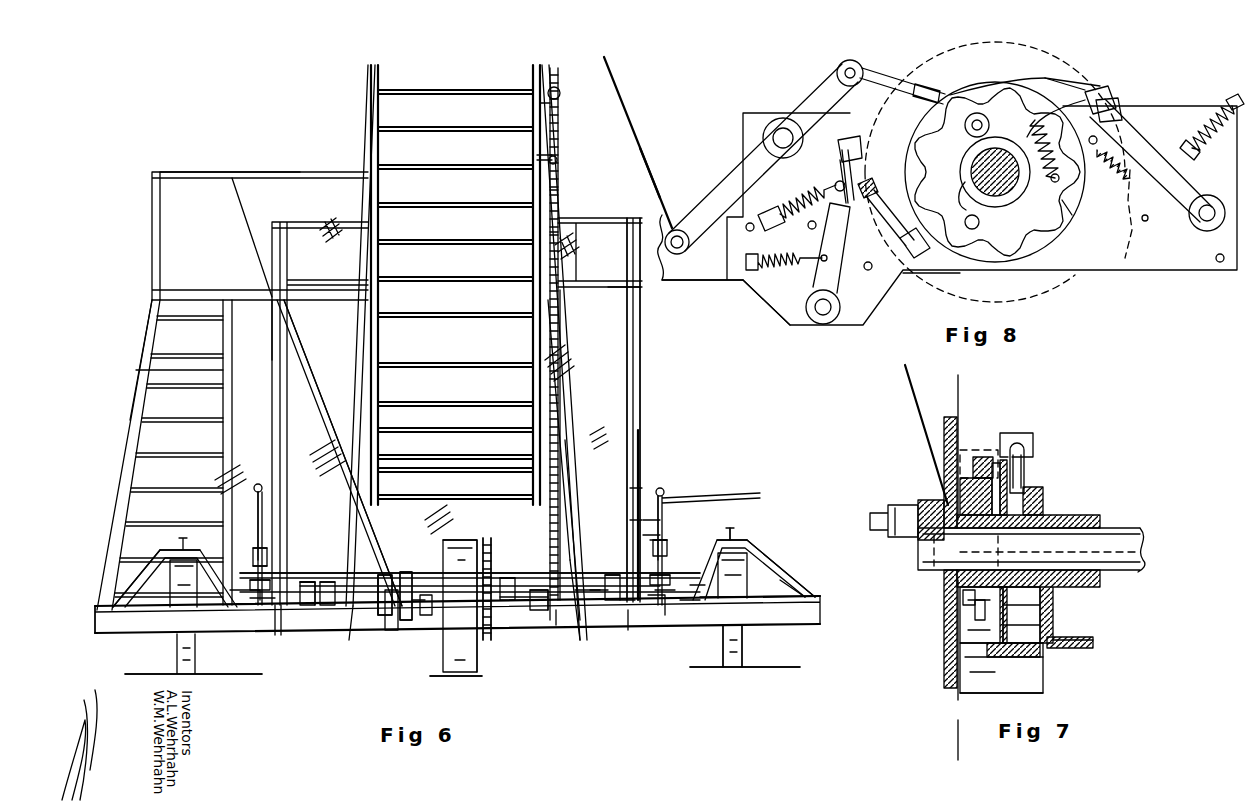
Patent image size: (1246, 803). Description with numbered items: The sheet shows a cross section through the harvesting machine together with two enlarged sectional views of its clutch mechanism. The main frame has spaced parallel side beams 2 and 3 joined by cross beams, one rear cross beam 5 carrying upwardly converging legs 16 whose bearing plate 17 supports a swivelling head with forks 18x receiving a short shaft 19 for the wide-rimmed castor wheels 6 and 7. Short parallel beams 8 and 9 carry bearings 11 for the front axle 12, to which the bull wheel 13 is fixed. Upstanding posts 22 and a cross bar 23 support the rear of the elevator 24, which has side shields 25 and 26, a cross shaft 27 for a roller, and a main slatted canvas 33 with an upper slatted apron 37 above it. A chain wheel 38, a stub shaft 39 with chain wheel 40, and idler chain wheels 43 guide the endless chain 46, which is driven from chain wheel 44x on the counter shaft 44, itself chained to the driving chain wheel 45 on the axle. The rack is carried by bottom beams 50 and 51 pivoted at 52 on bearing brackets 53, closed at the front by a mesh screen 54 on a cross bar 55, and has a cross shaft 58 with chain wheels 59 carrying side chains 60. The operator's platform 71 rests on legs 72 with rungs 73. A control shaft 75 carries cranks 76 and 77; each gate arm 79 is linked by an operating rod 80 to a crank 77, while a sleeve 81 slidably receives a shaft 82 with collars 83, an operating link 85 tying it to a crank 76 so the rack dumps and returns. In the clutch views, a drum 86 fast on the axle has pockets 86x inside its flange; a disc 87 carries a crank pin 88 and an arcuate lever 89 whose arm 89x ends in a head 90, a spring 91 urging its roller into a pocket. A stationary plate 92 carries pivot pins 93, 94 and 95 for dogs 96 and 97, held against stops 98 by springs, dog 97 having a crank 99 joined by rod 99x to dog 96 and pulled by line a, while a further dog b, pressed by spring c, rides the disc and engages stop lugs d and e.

In FIG. 6, the side beam 2 is at (358, 633).
In FIG. 6, the side beam 3 is at (549, 614).
In FIG. 6, the cross beam 5 is at (812, 597).
In FIG. 6, the castor wheel 6 is at (744, 648).
In FIG. 6, the castor wheel 7 is at (188, 668).
In FIG. 6, the beam 8 is at (526, 606).
In FIG. 7, the beam 8 is at (963, 570).
In FIG. 6, the beam 9 is at (420, 622).
In FIG. 8, the beam 9 is at (723, 275).
In FIG. 7, the beam 9 is at (1076, 648).
In FIG. 6, the bearing 11 is at (516, 598).
In FIG. 7, the bearing 11 is at (1092, 516).
In FIG. 6, the front axle 12 is at (460, 606).
In FIG. 8, the front axle 12 is at (1008, 188).
In FIG. 7, the front axle 12 is at (1122, 538).
In FIG. 6, the bull wheel 13 is at (462, 674).
In FIG. 6, the leg 16 is at (777, 570).
In FIG. 6, the bearing plate 17 is at (606, 366).
In FIG. 6, the fork 18x is at (780, 606).
In FIG. 6, the short shaft 19 is at (629, 345).
In FIG. 6, the upstanding post 22 is at (330, 612).
In FIG. 6, the cross bar 23 is at (265, 305).
In FIG. 6, the elevator 24 is at (455, 254).
In FIG. 6, the side shield 25 is at (560, 438).
In FIG. 6, the side shield 26 is at (373, 404).
In FIG. 6, the cross shaft 27 is at (586, 596).
In FIG. 6, the slatted canvas 33 is at (455, 447).
In FIG. 6, the upper slatted apron 37 is at (455, 182).
In FIG. 6, the chain wheel 38 is at (556, 86).
In FIG. 6, the stub shaft 39 is at (540, 157).
In FIG. 6, the chain wheel 40 is at (558, 160).
In FIG. 6, the idler chain wheel 43 is at (558, 195).
In FIG. 6, the counter shaft 44 is at (540, 608).
In FIG. 6, the chain wheel 44x is at (557, 622).
In FIG. 6, the driving chain wheel 45 is at (494, 626).
In FIG. 6, the endless chain 46 is at (578, 543).
In FIG. 6, the bottom beam 50 is at (624, 574).
In FIG. 6, the bottom beam 51 is at (292, 576).
In FIG. 6, the pivot 52 is at (266, 580).
In FIG. 6, the bearing bracket 53 is at (682, 598).
In FIG. 6, the open mesh screen 54 is at (604, 404).
In FIG. 6, the cross bar 55 is at (608, 287).
In FIG. 6, the front cross shaft 58 is at (322, 590).
In FIG. 6, the chain wheel 59 is at (302, 610).
In FIG. 6, the side chain 60 is at (606, 577).
In FIG. 6, the side platform 71 is at (252, 297).
In FIG. 6, the leg 72 is at (252, 178).
In FIG. 6, the rung 73 is at (165, 350).
In FIG. 6, the control shaft 75 is at (624, 612).
In FIG. 6, the crank 76 is at (278, 630).
In FIG. 6, the crank 77 is at (242, 606).
In FIG. 6, the outstanding arm 79 is at (666, 496).
In FIG. 6, the operating rod 80 is at (664, 508).
In FIG. 6, the sleeve 81 is at (665, 520).
In FIG. 6, the shaft 82 is at (640, 488).
In FIG. 6, the collar 83 is at (637, 492).
In FIG. 6, the operating link 85 is at (667, 568).
In FIG. 6, the drum 86 is at (394, 632).
In FIG. 8, the drum 86 is at (1038, 262).
In FIG. 7, the drum 86 is at (1012, 598).
In FIG. 8, the roller receiving pocket 86x is at (1071, 206).
In FIG. 7, the roller receiving pocket 86x is at (980, 628).
In FIG. 6, the disc 87 is at (386, 566).
In FIG. 8, the disc 87 is at (1068, 285).
In FIG. 7, the disc 87 is at (946, 432).
In FIG. 7, the crank pin 88 is at (872, 520).
In FIG. 8, the arcuate lever 89 is at (935, 140).
In FIG. 7, the arcuate lever 89 is at (962, 490).
In FIG. 8, the extending arm 89x is at (1088, 82).
In FIG. 8, the head 90 is at (1098, 90).
In FIG. 7, the head 90 is at (986, 455).
In FIG. 8, the coiled spring 91 is at (1072, 160).
In FIG. 8, the stationary plate 92 is at (1170, 268).
In FIG. 7, the stationary plate 92 is at (1046, 672).
In FIG. 8, the pivot pin 93 is at (1204, 224).
In FIG. 8, the pivot pin 94 is at (812, 318).
In FIG. 7, the pivot pin 94 is at (965, 700).
In FIG. 8, the pivot pin 95 is at (783, 128).
In FIG. 8, the dog 96 is at (1150, 162).
In FIG. 8, the dog 97 is at (868, 176).
In FIG. 8, the stop 98 is at (1136, 166).
In FIG. 6, the crank 99 is at (406, 546).
In FIG. 8, the crank 99 is at (815, 85).
In FIG. 7, the crank 99 is at (1020, 440).
In FIG. 8, the operating rod 99x is at (926, 72).
In FIG. 7, the operating rod 99x is at (1030, 471).
In FIG. 6, the pulling line a is at (322, 437).
In FIG. 8, the pulling line a is at (626, 118).
In FIG. 7, the pulling line a is at (918, 435).
In FIG. 8, the dog b is at (839, 214).
In FIG. 7, the dog b is at (980, 672).
In FIG. 8, the pressure spring c is at (760, 285).
In FIG. 8, the stop lug d is at (848, 112).
In FIG. 8, the stop lug e is at (1136, 214).
In FIG. 6, the shaft end A is at (654, 617).